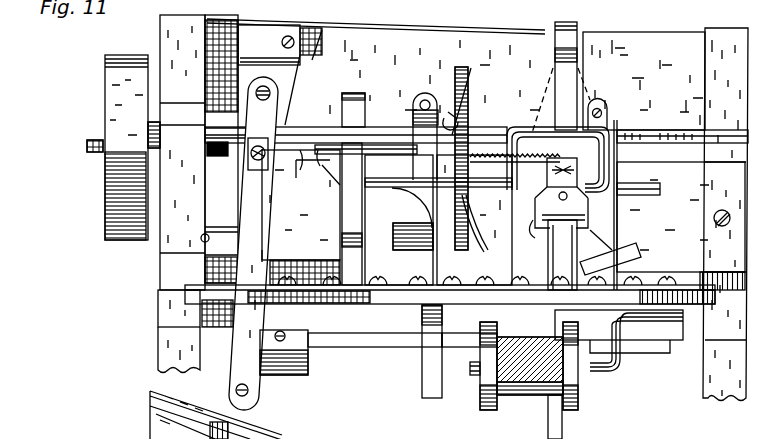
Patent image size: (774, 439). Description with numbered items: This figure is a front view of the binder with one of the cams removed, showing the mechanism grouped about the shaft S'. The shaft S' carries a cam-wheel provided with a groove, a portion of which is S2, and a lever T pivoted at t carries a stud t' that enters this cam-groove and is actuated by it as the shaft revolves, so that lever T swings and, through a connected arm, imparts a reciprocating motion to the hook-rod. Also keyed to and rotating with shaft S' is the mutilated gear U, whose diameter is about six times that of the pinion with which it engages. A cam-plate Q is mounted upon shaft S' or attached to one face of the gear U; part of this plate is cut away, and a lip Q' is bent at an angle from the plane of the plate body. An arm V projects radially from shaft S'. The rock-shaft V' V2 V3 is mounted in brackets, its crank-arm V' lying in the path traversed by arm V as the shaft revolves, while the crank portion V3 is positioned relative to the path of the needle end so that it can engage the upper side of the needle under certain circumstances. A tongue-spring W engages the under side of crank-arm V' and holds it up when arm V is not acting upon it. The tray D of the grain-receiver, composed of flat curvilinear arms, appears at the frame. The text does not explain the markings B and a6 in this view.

The shaft S' is at (86, 142).
The cam-groove portion S2 is at (126, 147).
The pivot t is at (263, 105).
The stud t' is at (247, 159).
The lever T is at (253, 243).
The arm V is at (491, 184).
The tongue-spring W is at (350, 214).
The crank-arm V' is at (318, 184).
The mutilated gear U is at (435, 136).
The cam-plate Q is at (466, 158).
The rock-shaft portion V2 is at (555, 220).
The lip Q' is at (474, 220).
The bar B is at (485, 221).
The crank portion V3 is at (608, 114).
The tray D is at (644, 81).
The board a6 is at (216, 415).